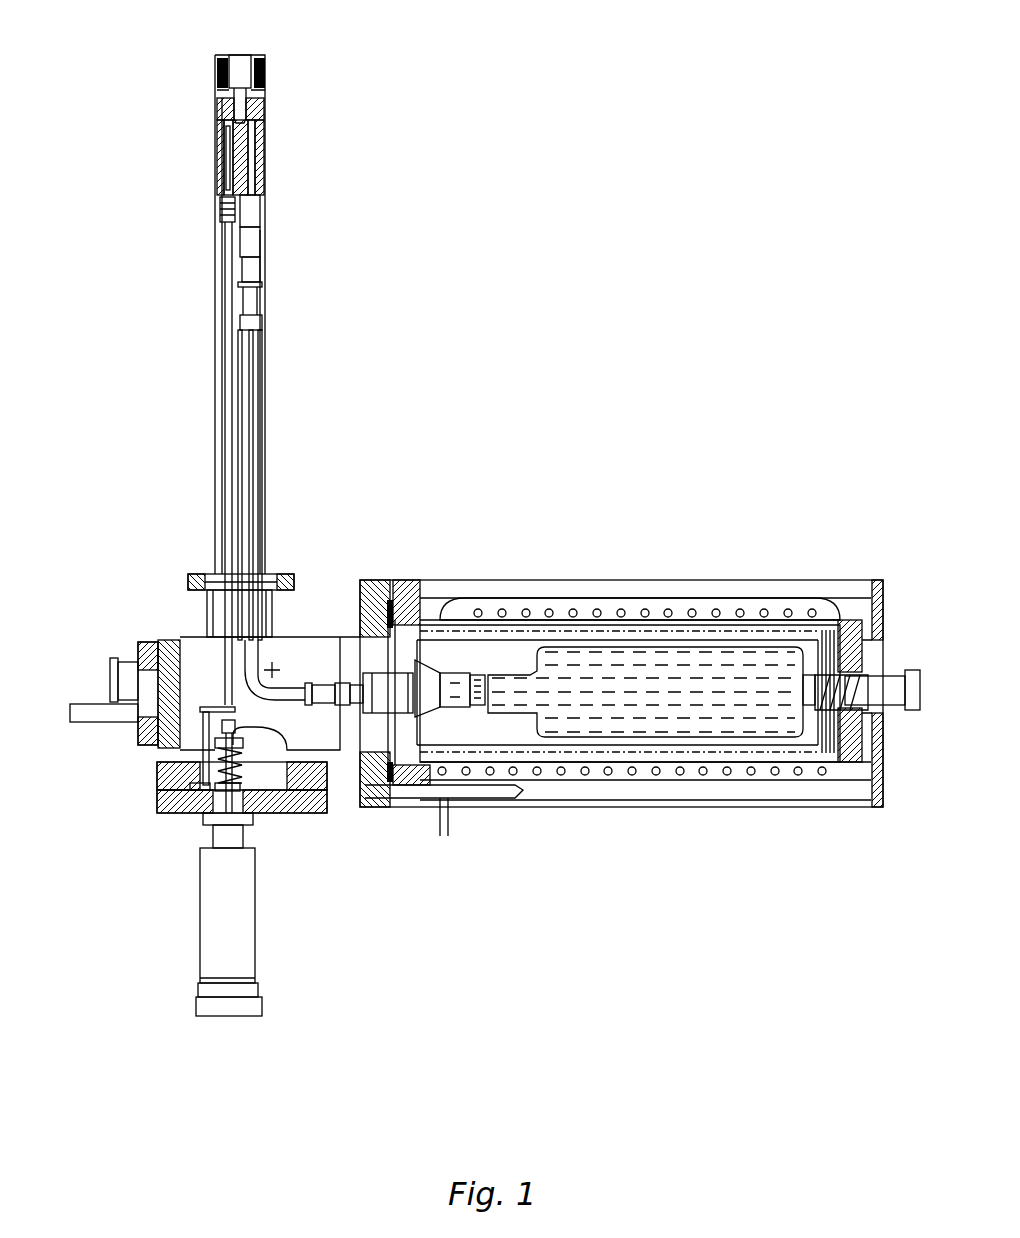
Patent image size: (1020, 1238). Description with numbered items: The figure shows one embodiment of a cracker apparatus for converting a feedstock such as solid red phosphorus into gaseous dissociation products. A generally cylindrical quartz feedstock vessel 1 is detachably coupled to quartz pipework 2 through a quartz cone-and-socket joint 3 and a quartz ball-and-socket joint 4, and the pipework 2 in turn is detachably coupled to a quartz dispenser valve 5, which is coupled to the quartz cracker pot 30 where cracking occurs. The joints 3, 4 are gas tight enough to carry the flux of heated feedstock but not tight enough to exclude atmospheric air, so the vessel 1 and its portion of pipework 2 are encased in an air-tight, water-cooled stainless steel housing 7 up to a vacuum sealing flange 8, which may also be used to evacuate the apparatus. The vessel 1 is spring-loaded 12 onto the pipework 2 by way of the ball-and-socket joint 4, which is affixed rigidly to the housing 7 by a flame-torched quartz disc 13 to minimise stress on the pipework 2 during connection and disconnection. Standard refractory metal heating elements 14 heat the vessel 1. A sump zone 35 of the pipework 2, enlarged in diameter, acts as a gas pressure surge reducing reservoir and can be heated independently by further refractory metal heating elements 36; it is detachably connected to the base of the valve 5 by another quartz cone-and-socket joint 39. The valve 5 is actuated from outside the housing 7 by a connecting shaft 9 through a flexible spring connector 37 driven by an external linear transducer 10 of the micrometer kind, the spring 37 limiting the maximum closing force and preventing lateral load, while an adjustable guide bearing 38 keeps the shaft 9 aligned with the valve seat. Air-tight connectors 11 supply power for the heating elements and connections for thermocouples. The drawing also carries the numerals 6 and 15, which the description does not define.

The quartz feedstock vessel 1 is at (738, 660).
The quartz pipework 2 is at (274, 668).
The quartz cone-and-socket joint 3 is at (321, 703).
The quartz ball-and-socket joint 4 is at (440, 673).
The quartz dispenser valve 5 is at (215, 135).
The nozzle orifice 6 is at (450, 700).
The air-tight stainless steel housing 7 is at (553, 772).
The vacuum sealing flange 8 is at (293, 573).
The connecting shaft 9 is at (222, 338).
The linear transducer 10 is at (200, 949).
The air-tight connectors 11 is at (115, 662).
The spring loading 12 is at (850, 670).
The quartz disc 13 is at (418, 657).
The refractory metal heating elements 14 is at (512, 650).
The heater jacket 15 is at (690, 605).
The quartz cracker pot 30 is at (230, 52).
The sump zone 35 is at (265, 318).
The refractory metal heating elements 36 is at (268, 468).
The flexible spring connector 37 is at (240, 770).
The adjustable guide bearing 38 is at (220, 703).
The quartz cone-and-socket joint 39 is at (265, 265).